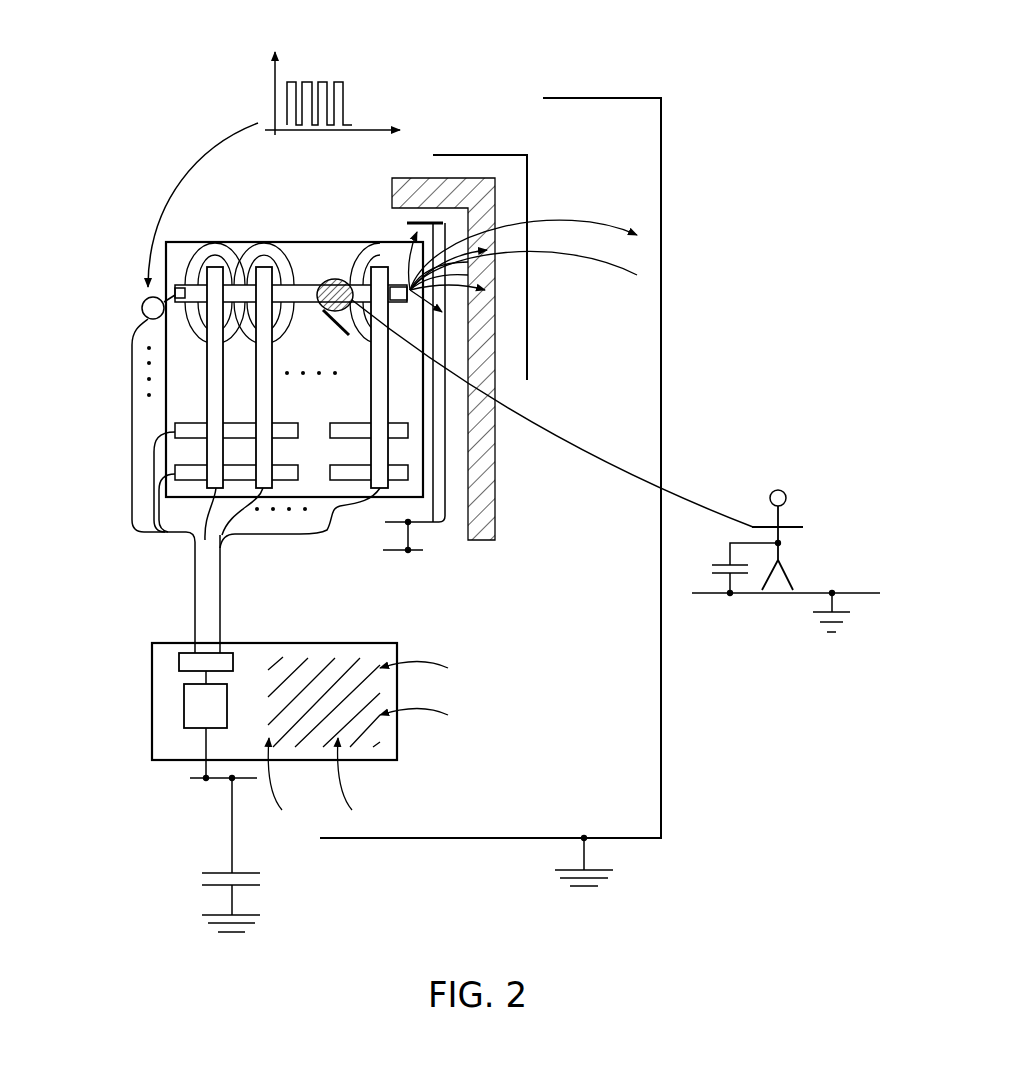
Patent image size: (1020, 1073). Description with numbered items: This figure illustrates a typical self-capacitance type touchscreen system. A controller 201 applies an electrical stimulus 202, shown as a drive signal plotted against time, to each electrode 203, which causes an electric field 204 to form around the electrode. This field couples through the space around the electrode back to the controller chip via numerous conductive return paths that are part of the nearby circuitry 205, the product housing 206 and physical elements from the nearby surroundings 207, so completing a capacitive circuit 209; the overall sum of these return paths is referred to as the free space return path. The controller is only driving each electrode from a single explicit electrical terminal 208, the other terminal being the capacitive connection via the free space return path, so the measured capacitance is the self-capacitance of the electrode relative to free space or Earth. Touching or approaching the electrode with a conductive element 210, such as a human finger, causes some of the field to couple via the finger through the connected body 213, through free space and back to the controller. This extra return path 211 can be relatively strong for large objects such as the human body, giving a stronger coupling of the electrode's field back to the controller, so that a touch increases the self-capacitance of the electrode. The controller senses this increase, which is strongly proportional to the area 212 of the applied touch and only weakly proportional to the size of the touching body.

The controller 201 is at (182, 707).
The electrical stimulus 202 is at (335, 63).
The electrode 203 is at (370, 268).
The electric field 204 is at (195, 242).
The nearby circuitry 205 is at (437, 223).
The product housing 206 is at (520, 202).
The physical elements from the nearby surroundings 207 is at (637, 423).
The single explicit electrical terminal 208 is at (160, 305).
The capacitive circuit 209 is at (432, 707).
The conductive element 210 is at (350, 338).
The extra return path 211 is at (720, 578).
The area of the applied touch 212 is at (325, 312).
The connected body 213 is at (788, 518).